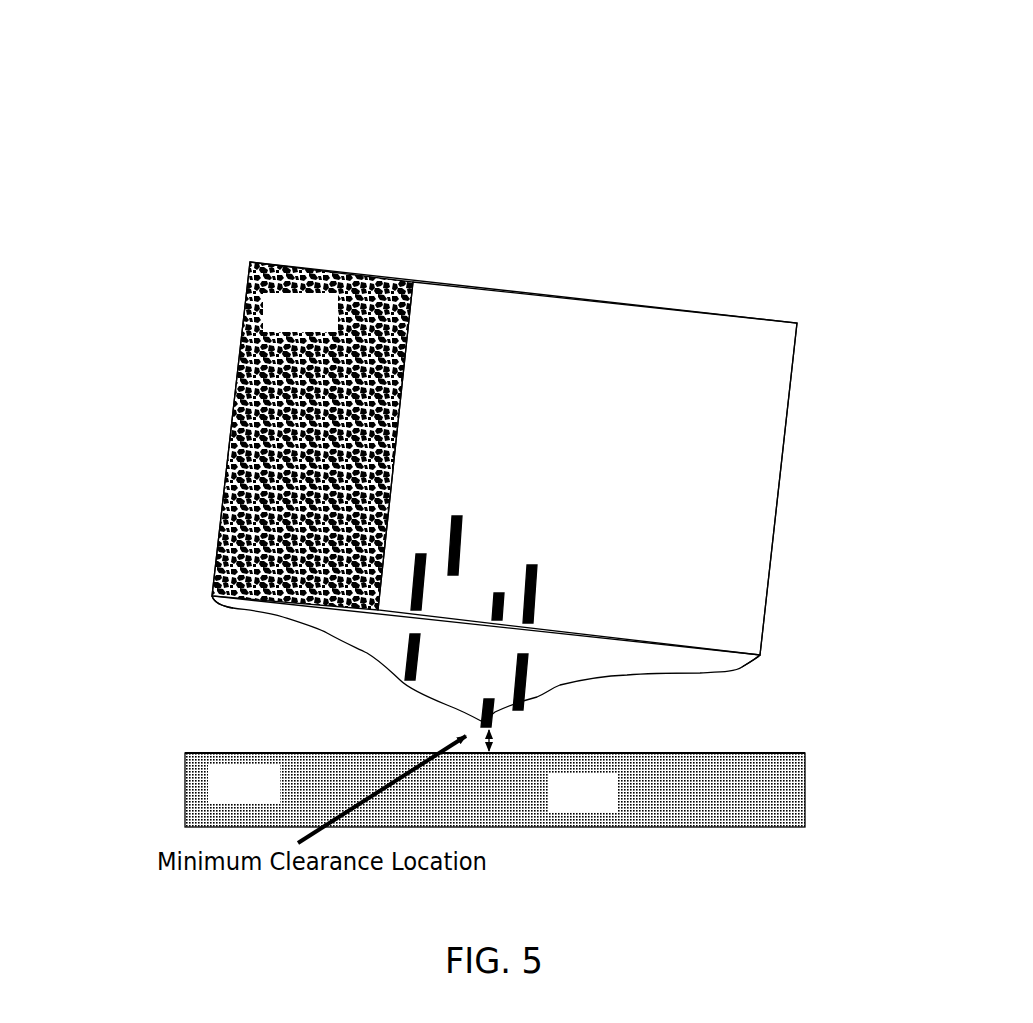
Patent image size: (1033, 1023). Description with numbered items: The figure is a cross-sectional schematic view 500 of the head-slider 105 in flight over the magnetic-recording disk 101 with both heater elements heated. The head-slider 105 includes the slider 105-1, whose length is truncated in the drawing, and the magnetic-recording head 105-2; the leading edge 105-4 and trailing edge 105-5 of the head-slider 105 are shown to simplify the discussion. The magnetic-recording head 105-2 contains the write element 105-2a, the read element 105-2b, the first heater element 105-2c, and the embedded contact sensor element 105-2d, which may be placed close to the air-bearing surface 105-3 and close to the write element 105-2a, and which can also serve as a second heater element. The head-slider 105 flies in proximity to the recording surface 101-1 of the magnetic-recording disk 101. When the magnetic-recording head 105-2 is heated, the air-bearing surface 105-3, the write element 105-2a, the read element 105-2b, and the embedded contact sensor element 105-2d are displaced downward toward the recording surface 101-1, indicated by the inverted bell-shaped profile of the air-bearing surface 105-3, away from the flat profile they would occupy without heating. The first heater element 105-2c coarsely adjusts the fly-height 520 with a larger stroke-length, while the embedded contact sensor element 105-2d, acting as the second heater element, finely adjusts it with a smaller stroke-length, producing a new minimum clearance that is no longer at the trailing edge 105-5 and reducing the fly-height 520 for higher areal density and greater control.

The cross-sectional schematic view 500 is at (128, 85).
The head-slider 105 is at (263, 248).
The slider 105-1 is at (332, 326).
The magnetic-recording head 105-2 is at (507, 340).
The write element 105-2a is at (535, 654).
The read element 105-2b is at (404, 591).
The first heater element 105-2c is at (459, 514).
The embedded contact sensor element (ECSE) 105-2d is at (471, 696).
The air-bearing surface (ABS) 105-3 is at (583, 647).
The leading edge 105-4 is at (206, 599).
The trailing edge 105-5 is at (770, 652).
The magnetic-recording disk 101 is at (262, 798).
The recording surface 101-1 is at (202, 741).
The fly-height 520 is at (501, 741).